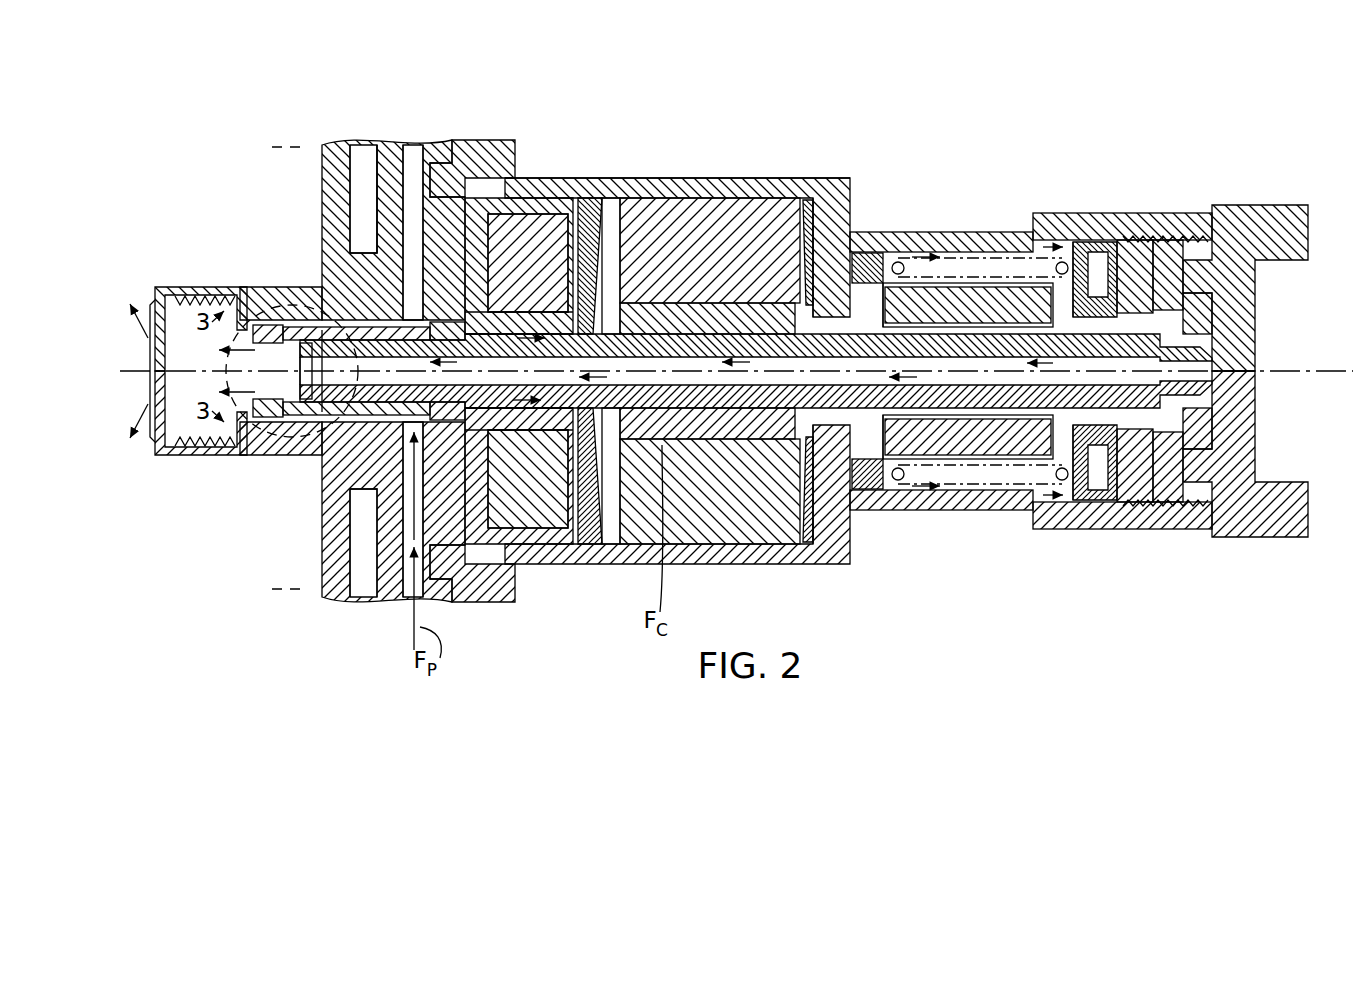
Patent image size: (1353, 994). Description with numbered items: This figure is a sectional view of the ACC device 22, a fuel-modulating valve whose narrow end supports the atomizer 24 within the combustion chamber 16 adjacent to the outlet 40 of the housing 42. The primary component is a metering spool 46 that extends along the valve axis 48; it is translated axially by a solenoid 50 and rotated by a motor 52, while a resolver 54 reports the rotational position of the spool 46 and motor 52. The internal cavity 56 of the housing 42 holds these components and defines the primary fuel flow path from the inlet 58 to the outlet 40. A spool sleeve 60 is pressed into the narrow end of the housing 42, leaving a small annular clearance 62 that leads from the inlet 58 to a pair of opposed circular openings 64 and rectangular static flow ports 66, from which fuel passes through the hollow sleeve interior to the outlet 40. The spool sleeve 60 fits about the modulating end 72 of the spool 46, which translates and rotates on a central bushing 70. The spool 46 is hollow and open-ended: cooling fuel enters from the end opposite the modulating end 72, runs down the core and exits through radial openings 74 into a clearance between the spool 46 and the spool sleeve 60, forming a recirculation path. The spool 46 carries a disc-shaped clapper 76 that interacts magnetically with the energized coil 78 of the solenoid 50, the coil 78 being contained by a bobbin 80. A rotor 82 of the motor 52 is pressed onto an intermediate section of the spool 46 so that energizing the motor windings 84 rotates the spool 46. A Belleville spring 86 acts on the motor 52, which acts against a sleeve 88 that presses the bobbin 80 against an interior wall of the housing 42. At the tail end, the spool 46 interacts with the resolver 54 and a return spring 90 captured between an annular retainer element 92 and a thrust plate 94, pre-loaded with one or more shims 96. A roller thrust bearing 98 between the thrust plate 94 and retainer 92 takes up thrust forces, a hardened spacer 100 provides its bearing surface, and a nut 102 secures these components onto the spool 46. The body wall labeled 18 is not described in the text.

The combustion chamber 16 is at (204, 523).
The housing body 18 is at (325, 594).
The ACC device 22 is at (718, 124).
The atomizer 24 is at (162, 446).
The outlet 40 is at (243, 297).
The housing 42 is at (818, 192).
The metering spool 46 is at (578, 470).
The valve axis 48 is at (1320, 370).
The solenoid 50 is at (522, 212).
The motor 52 is at (678, 212).
The resolver 54 is at (1085, 250).
The internal cavity 56 is at (593, 230).
The inlet 58 is at (448, 565).
The spool sleeve 60 is at (398, 320).
The annular clearance 62 is at (298, 328).
The circular openings 64 is at (266, 330).
The static flow ports 66 is at (292, 383).
The central bushing 70 is at (893, 284).
The modulating end 72 is at (312, 430).
The radial openings 74 is at (352, 198).
The clapper 76 is at (574, 210).
The coil 78 is at (553, 500).
The bobbin 80 is at (540, 546).
The rotor 82 is at (660, 440).
The motor windings 84 is at (748, 450).
The Belleville spring 86 is at (818, 470).
The sleeve 88 is at (606, 200).
The return spring 90 is at (920, 258).
The annular retainer element 92 is at (866, 258).
The thrust plate 94 is at (1085, 250).
The shims 96 is at (893, 500).
The roller thrust bearing 98 is at (1172, 240).
The hardened spacer 100 is at (1132, 270).
The nut 102 is at (1190, 472).